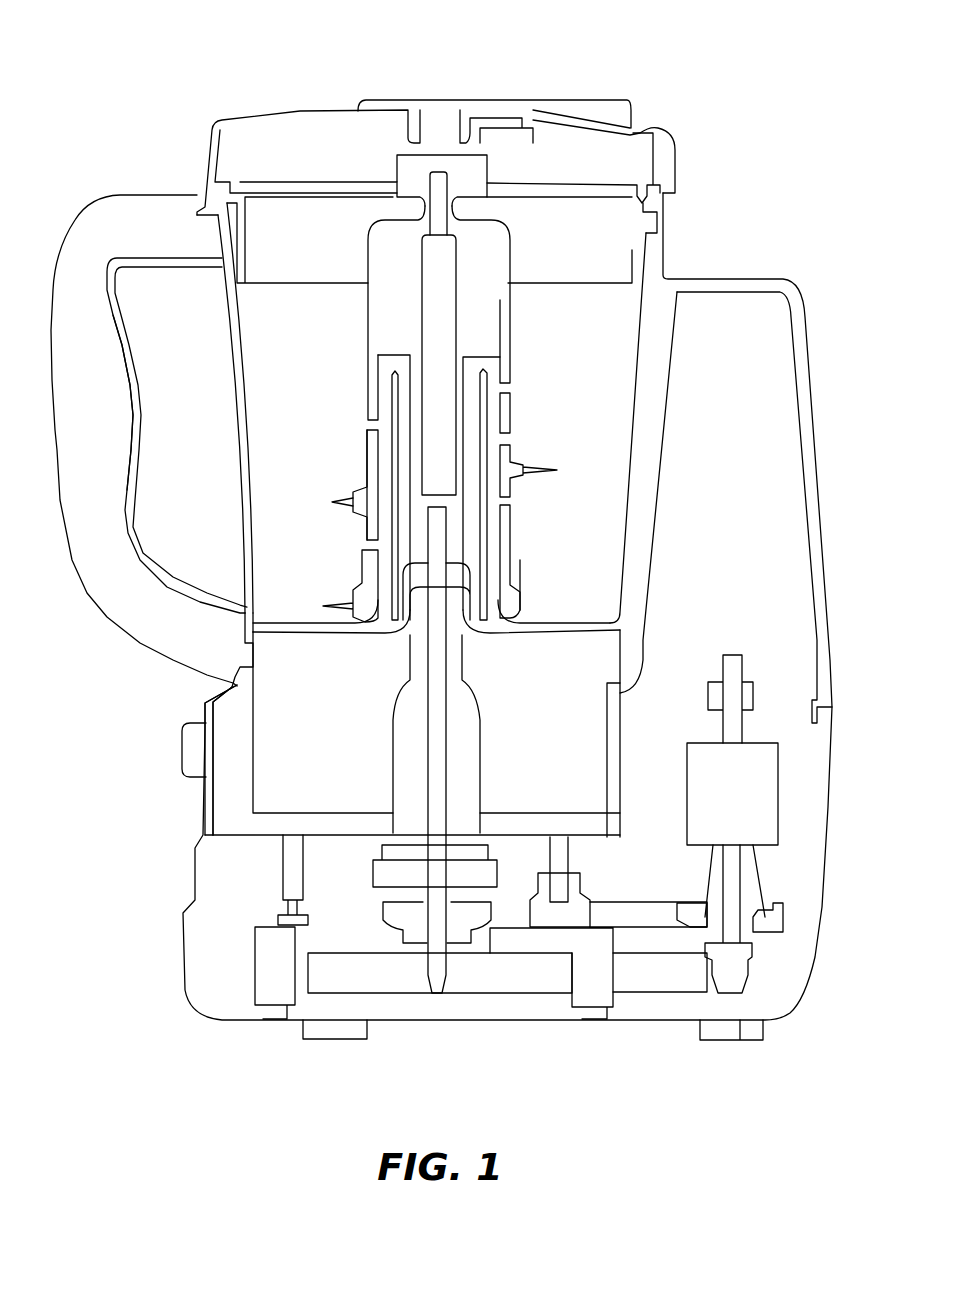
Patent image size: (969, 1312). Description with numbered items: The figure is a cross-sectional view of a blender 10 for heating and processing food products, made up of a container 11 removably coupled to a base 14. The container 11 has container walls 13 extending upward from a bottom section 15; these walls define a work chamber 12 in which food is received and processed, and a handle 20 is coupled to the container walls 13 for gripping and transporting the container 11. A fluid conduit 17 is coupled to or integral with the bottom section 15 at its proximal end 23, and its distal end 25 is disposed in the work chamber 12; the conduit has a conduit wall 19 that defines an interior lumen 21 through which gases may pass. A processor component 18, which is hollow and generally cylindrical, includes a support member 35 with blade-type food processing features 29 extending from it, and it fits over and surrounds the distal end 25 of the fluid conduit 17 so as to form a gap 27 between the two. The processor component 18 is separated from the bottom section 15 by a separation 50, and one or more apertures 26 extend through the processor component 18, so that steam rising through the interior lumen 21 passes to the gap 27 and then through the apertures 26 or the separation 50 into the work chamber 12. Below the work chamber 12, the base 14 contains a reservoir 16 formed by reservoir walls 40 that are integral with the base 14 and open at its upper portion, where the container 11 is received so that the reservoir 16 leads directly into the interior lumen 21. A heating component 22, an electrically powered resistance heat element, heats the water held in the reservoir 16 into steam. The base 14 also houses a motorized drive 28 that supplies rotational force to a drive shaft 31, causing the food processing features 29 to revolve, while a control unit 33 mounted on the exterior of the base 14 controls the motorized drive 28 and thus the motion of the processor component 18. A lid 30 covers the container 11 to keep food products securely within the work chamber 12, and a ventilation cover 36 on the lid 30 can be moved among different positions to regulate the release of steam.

The blender 10 is at (114, 68).
The container 11 is at (715, 183).
The work chamber 12 is at (255, 350).
The container walls 13 is at (228, 425).
The base 14 is at (133, 886).
The bottom section 15 is at (660, 628).
The reservoir 16 is at (320, 703).
The fluid conduit 17 is at (382, 378).
The processor component 18 is at (333, 465).
The conduit wall 19 is at (488, 405).
The handle 20 is at (112, 193).
The interior lumen 21 is at (471, 385).
The heating component 22 is at (260, 828).
The proximal end 23 is at (532, 618).
The distal end 25 is at (464, 350).
The apertures 26 is at (360, 425).
The gap 27 is at (492, 544).
The motorized drive 28 is at (780, 800).
The food processing features 29 is at (335, 503).
The lid 30 is at (272, 118).
The drive shaft 31 is at (450, 725).
The control unit 33 is at (180, 750).
The support member 35 is at (508, 266).
The ventilation cover 36 is at (600, 100).
The reservoir walls 40 is at (623, 733).
The separation 50 is at (343, 619).